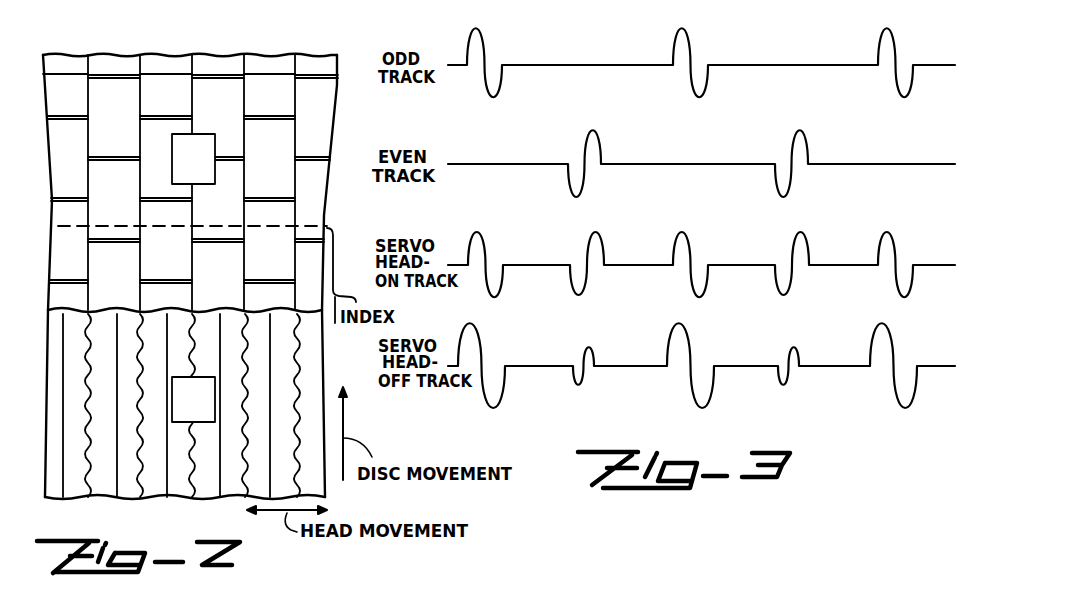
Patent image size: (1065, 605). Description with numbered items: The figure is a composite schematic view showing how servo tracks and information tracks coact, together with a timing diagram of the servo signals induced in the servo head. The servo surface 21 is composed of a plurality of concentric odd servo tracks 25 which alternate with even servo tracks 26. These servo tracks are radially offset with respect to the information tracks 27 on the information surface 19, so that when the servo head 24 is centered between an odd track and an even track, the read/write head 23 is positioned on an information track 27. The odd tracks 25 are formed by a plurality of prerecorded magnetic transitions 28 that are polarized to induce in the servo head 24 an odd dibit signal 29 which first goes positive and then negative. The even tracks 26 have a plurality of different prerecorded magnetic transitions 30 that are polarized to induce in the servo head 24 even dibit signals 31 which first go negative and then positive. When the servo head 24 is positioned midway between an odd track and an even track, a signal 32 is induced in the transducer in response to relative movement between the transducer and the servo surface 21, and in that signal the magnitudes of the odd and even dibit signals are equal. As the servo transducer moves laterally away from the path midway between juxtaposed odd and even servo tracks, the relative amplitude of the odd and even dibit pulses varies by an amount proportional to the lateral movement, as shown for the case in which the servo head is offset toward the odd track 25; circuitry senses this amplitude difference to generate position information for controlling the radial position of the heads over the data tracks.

In FIG. 2, the information surface 19 is at (52, 474).
In FIG. 2, the servo surface 21 is at (337, 113).
In FIG. 2, the read/write head 23 is at (206, 411).
In FIG. 2, the servo head 24 is at (206, 168).
In FIG. 2, the odd servo tracks 25 is at (60, 55).
In FIG. 2, the even servo tracks 26 is at (108, 55).
In FIG. 2, the information tracks 27 is at (190, 498).
In FIG. 2, the prerecorded magnetic transitions 28 is at (63, 120).
In FIG. 3, the odd dibit signal 29 is at (483, 43).
In FIG. 2, the prerecorded magnetic transitions 30 is at (218, 155).
In FIG. 3, the even dibit signals 31 is at (600, 142).
In FIG. 3, the signal 32 is at (527, 265).